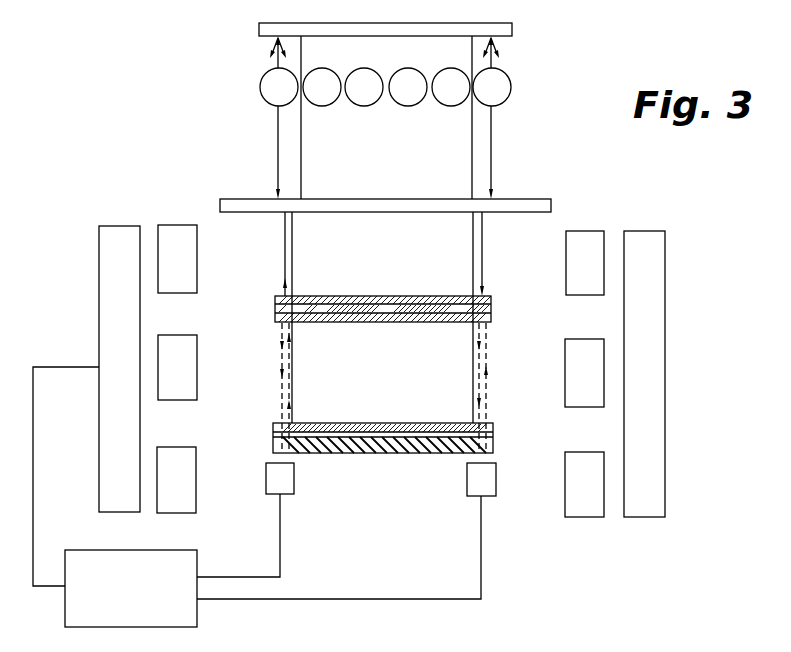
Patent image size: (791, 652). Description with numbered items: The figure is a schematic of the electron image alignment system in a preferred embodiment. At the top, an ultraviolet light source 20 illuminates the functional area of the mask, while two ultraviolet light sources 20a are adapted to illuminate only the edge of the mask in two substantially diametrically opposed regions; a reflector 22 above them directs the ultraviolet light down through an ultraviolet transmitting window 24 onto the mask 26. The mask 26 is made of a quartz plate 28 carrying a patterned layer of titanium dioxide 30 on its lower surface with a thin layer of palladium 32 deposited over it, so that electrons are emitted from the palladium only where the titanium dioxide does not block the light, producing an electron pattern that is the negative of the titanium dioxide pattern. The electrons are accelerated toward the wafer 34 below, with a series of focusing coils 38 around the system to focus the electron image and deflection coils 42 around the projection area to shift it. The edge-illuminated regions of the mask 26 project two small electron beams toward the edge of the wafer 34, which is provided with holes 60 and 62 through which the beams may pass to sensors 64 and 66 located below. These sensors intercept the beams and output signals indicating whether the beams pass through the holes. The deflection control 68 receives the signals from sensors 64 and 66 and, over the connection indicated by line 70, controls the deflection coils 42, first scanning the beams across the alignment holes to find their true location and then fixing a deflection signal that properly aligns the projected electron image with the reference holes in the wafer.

The ultraviolet light source 20 is at (348, 66).
The ultraviolet light sources 20a is at (260, 87).
The reflector 22 is at (512, 22).
The ultraviolet transmitting window 24 is at (533, 199).
The mask 26 is at (401, 293).
The quartz plate 28 is at (425, 296).
The patterned layer of titanium dioxide 30 is at (276, 304).
The thin layer of palladium 32 is at (275, 320).
The wafer 34 is at (273, 447).
The focusing coils 38 is at (176, 225).
The deflection coils 42 is at (99, 265).
The hole 60 is at (282, 421).
The hole 62 is at (484, 421).
The sensor 64 is at (294, 487).
The sensor 66 is at (467, 492).
The deflection control 68 is at (65, 617).
The line 70 is at (62, 367).